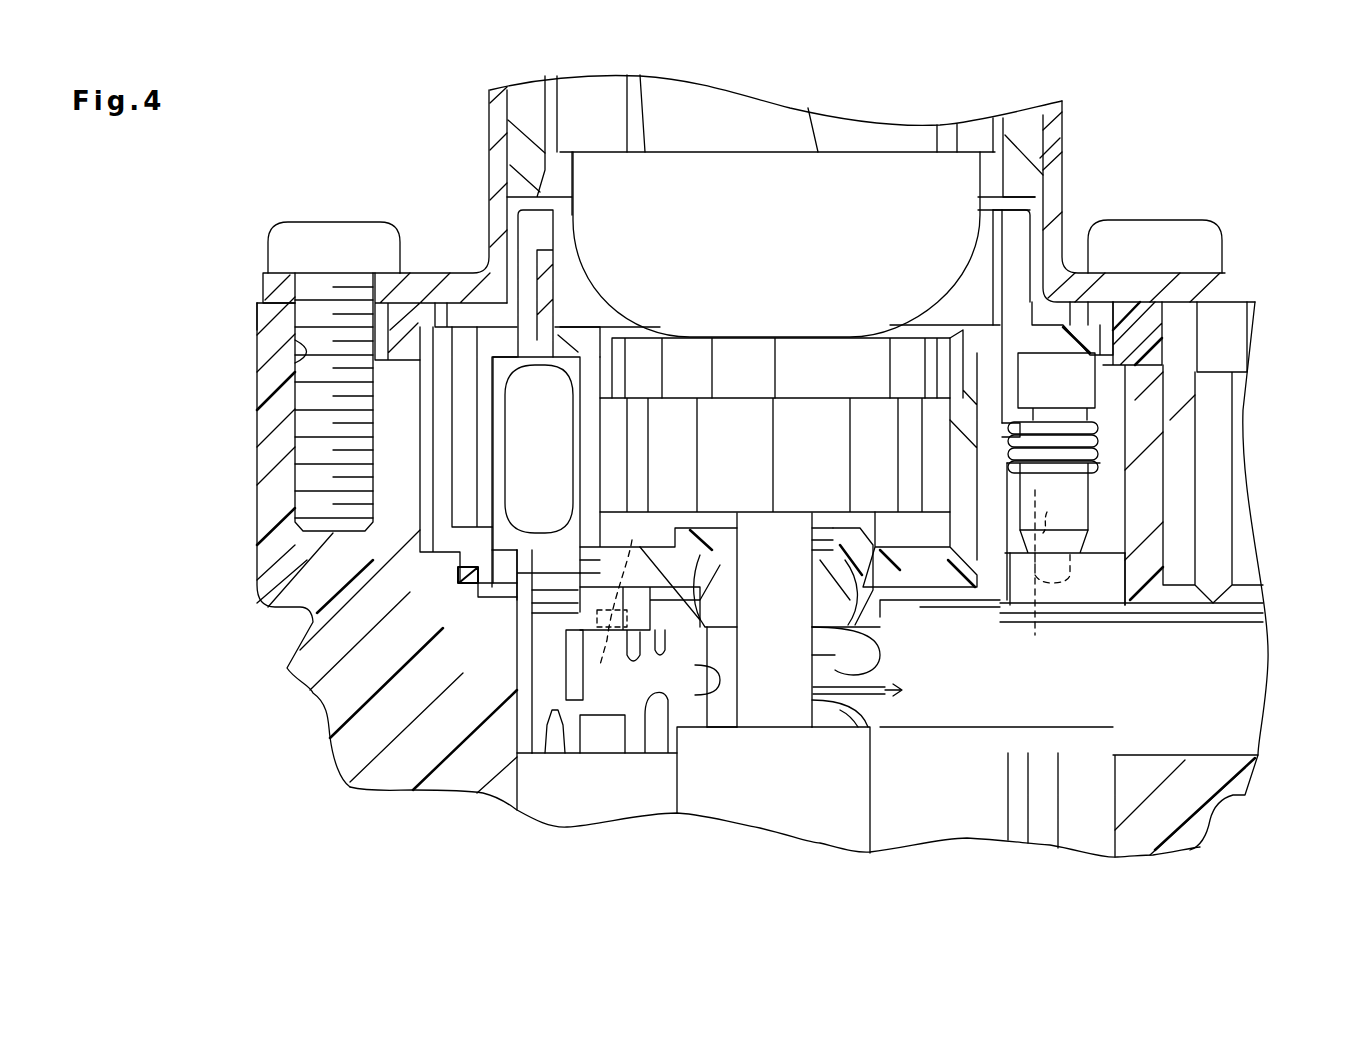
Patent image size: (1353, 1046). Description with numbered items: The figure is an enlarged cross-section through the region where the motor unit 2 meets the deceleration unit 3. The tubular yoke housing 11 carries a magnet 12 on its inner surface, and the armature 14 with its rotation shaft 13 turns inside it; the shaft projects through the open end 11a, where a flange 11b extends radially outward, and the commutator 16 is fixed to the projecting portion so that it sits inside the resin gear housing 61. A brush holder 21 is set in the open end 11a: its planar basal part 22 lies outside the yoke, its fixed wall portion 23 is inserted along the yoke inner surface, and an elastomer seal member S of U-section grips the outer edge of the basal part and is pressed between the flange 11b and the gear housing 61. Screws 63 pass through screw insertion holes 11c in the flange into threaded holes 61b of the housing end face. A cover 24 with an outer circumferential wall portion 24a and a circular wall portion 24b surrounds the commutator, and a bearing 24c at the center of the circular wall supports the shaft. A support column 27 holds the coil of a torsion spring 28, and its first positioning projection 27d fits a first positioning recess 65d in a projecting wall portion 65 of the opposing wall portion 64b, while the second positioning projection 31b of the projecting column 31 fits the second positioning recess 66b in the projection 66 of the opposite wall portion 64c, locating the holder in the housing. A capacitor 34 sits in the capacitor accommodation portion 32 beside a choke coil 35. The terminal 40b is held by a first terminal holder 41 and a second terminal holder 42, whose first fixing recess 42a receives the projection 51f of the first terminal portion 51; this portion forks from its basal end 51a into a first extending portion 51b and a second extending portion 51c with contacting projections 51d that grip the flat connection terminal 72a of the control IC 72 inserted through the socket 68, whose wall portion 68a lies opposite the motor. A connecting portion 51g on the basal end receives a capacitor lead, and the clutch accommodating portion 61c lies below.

The motor unit 2 is at (477, 116).
The deceleration unit 3 is at (246, 332).
The yoke housing 11 is at (1064, 121).
The open end 11a is at (1040, 226).
The flange 11b is at (432, 290).
The screw insertion hole 11c is at (300, 266).
The magnet 12 is at (1026, 120).
The rotation shaft 13 is at (772, 715).
The armature 14 is at (736, 104).
The commutator 16 is at (790, 514).
The brush holder 21 is at (436, 490).
The basal part 22 is at (1105, 318).
The fixed wall portion 23 is at (565, 232).
The cover 24 is at (580, 453).
The outer circumferential wall portion 24a is at (952, 522).
The circular wall portion 24b is at (965, 598).
The bearing 24c is at (722, 600).
The support column 27 is at (1080, 540).
The first positioning projection 27d is at (1053, 498).
The torsion spring 28 is at (1065, 432).
The projecting column 31 is at (438, 548).
The second positioning projection 31b is at (462, 572).
The capacitor accommodation portion 32 is at (577, 355).
The capacitor 34 is at (538, 527).
The choke coil 35 is at (533, 603).
The terminal 40b is at (660, 745).
The first terminal holder 41 is at (716, 715).
The second terminal holder 42 is at (652, 636).
The first fixing recess 42a is at (600, 665).
The first terminal portion 51 is at (838, 720).
The basal end 51a is at (628, 735).
The first extending portion 51b is at (883, 718).
The second extending portion 51c is at (883, 655).
The contacting projection 51d is at (886, 691).
The projection 51f is at (617, 588).
The connecting portion 51g is at (562, 748).
The gear housing 61 is at (256, 508).
The threaded hole 61b is at (300, 352).
The clutch accommodating portion 61c is at (527, 808).
The screw 63 is at (330, 222).
The opposing wall portion 64c is at (410, 412).
The opposing wall portion 64b is at (1152, 553).
The projecting wall portion 65 is at (1087, 590).
The first positioning recess 65d is at (1038, 578).
The projection 66 is at (515, 670).
The second positioning recess 66b is at (480, 588).
The socket 68 is at (1133, 604).
The wall portion 68a is at (1258, 756).
The control IC 72 is at (1267, 676).
The connection terminal 72a is at (812, 676).
The seal member S is at (1150, 328).